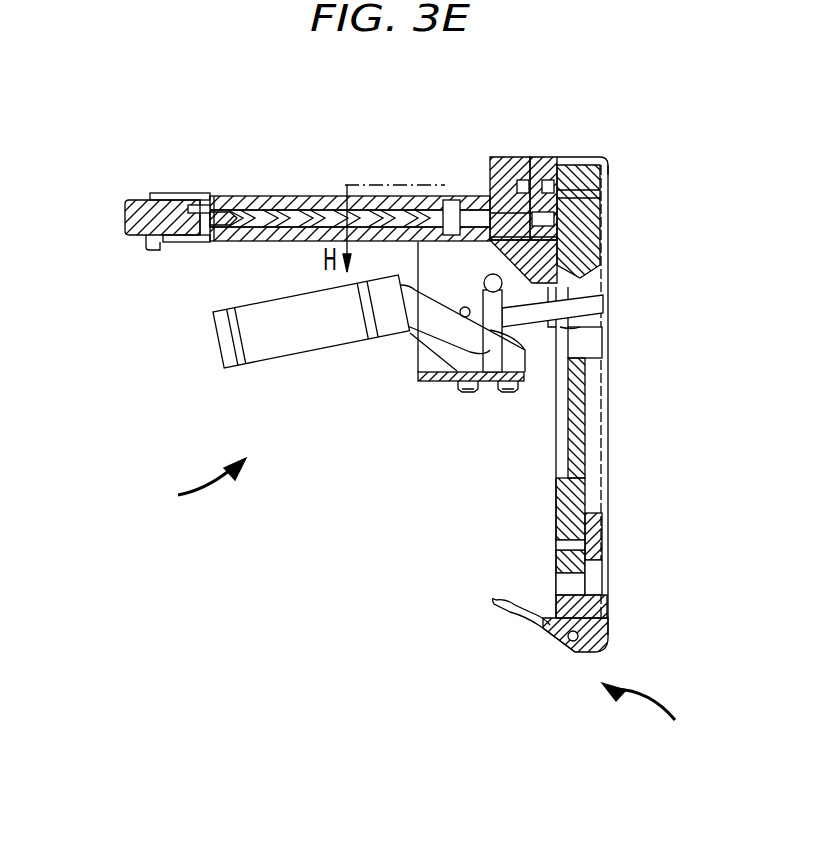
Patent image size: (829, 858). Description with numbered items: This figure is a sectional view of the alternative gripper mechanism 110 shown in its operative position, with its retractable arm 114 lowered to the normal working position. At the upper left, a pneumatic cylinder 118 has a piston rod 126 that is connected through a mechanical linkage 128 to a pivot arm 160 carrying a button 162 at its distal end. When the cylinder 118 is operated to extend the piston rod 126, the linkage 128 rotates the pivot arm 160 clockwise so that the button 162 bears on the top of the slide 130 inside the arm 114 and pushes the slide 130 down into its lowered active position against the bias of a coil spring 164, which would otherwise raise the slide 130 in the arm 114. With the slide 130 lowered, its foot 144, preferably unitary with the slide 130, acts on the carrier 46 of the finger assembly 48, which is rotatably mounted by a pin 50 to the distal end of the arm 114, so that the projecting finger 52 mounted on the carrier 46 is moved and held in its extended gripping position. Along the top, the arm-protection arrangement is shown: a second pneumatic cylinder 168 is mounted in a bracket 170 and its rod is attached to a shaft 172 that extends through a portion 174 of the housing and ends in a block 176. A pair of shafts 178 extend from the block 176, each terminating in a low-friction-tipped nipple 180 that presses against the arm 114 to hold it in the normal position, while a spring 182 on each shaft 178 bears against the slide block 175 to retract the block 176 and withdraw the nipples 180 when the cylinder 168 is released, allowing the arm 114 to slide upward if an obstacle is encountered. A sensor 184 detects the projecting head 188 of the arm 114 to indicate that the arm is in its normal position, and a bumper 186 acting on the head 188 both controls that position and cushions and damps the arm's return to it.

The carrier 46 is at (610, 642).
The finger assembly 48 is at (655, 710).
The pin 50 is at (572, 641).
The projecting finger 52 is at (496, 608).
The mechanism 110 is at (190, 486).
The arm 114 is at (556, 515).
The pneumatic cylinder 118 is at (214, 324).
The piston rod 126 is at (412, 335).
The mechanical linkage 128 is at (490, 335).
The slide 130 is at (597, 438).
The foot 144 is at (604, 611).
The pivot arm 160 is at (608, 300).
The button 162 is at (548, 330).
The coil spring 164 is at (590, 546).
The pneumatic cylinder 168 is at (127, 237).
The bracket 170 is at (150, 200).
The shaft 172 is at (270, 216).
The housing portion 174 is at (328, 196).
The slide block 175 is at (548, 158).
The block 176 is at (452, 200).
The shafts 178 is at (520, 157).
The nipple 180 is at (606, 246).
The spring 182 is at (503, 160).
The sensor 184 is at (538, 157).
The bumper 186 is at (602, 196).
The projecting head 188 is at (590, 157).